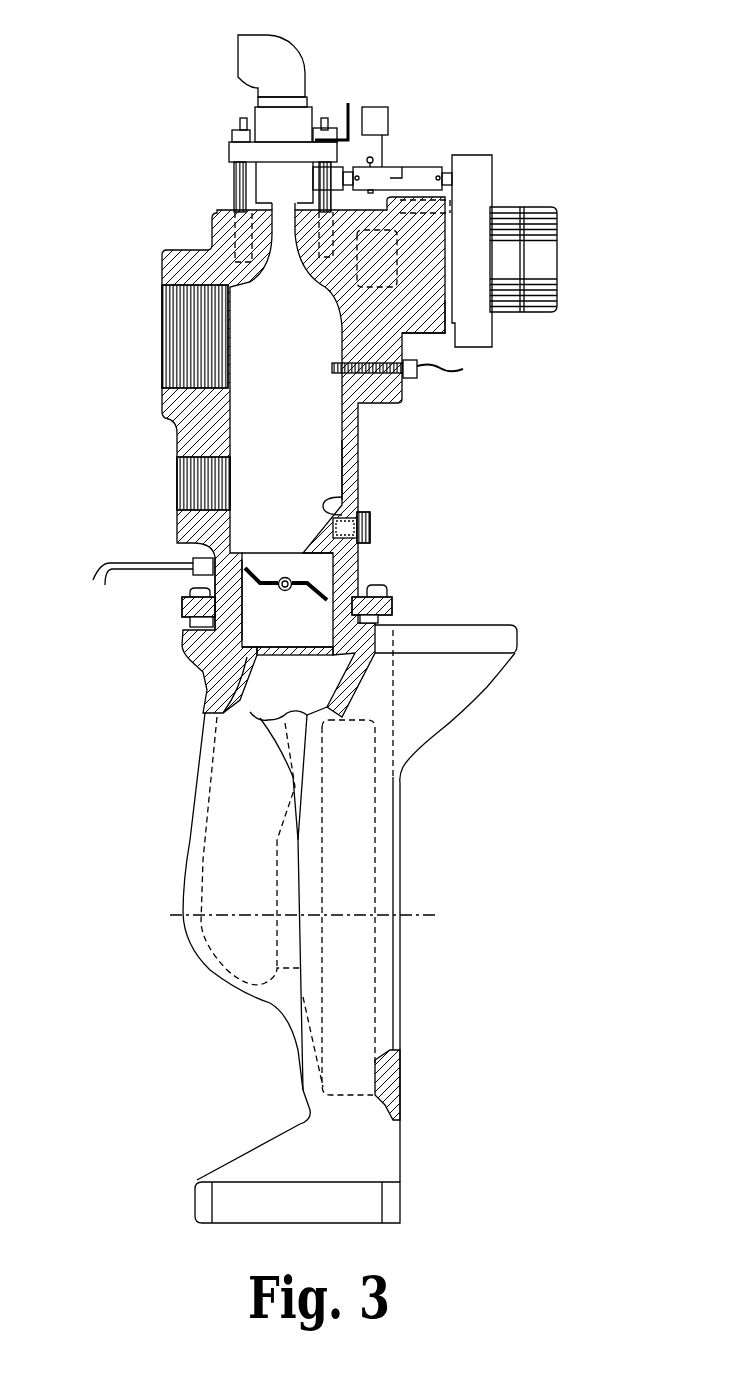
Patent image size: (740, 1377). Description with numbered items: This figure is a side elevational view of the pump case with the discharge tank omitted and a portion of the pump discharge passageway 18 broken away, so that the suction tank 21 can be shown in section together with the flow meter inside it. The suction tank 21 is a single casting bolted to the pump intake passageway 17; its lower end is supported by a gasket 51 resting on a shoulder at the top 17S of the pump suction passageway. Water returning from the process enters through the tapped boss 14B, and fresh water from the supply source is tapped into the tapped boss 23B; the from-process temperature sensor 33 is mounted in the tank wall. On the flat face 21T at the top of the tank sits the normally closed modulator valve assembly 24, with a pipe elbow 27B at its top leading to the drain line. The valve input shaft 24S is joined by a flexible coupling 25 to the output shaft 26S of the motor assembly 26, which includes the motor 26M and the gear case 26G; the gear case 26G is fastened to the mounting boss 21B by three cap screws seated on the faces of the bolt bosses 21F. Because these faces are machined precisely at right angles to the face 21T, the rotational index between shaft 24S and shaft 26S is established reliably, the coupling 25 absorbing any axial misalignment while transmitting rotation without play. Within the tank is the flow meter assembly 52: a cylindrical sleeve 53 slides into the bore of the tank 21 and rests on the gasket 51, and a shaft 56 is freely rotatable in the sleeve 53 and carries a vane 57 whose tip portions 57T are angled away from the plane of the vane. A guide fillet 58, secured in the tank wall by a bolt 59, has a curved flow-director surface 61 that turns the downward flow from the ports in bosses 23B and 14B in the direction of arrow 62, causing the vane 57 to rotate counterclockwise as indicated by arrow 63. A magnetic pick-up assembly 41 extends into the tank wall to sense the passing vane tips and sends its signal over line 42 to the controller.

The tapped boss 14B is at (163, 273).
The intake passageway 17 is at (197, 733).
The top of the pump suction passageway 17S is at (250, 712).
The discharge passageway 18 is at (428, 705).
The suction tank 21 is at (350, 480).
The face at the top 21T is at (277, 203).
The mounting boss 21B is at (435, 372).
The bolt bosses 21F is at (455, 325).
The tapped boss 23B is at (177, 455).
The modulator valve assembly 24 is at (205, 158).
The input shaft 24S is at (343, 172).
The flexible coupling 25 is at (380, 178).
The motor assembly 26 is at (535, 236).
The output shaft 26S is at (435, 170).
The gear case 26G is at (485, 170).
The motor 26M is at (510, 283).
The pipe elbow 27B is at (275, 48).
The temperature sensor 33 is at (410, 322).
The magnetic pick-up assembly 41 is at (193, 560).
The signal line 42 is at (110, 563).
The gasket 51 is at (203, 695).
The flow meter assembly 52 is at (165, 618).
The cylindrical sleeve 53 is at (233, 553).
The shaft 56 is at (352, 608).
The vane 57 is at (215, 598).
The tip portions 57T is at (255, 568).
The guide fillet 58 is at (367, 513).
The bolt 59 is at (367, 535).
The curved flow-director surface 61 is at (345, 512).
The arrow 62 is at (342, 470).
The arrow 63 is at (275, 560).